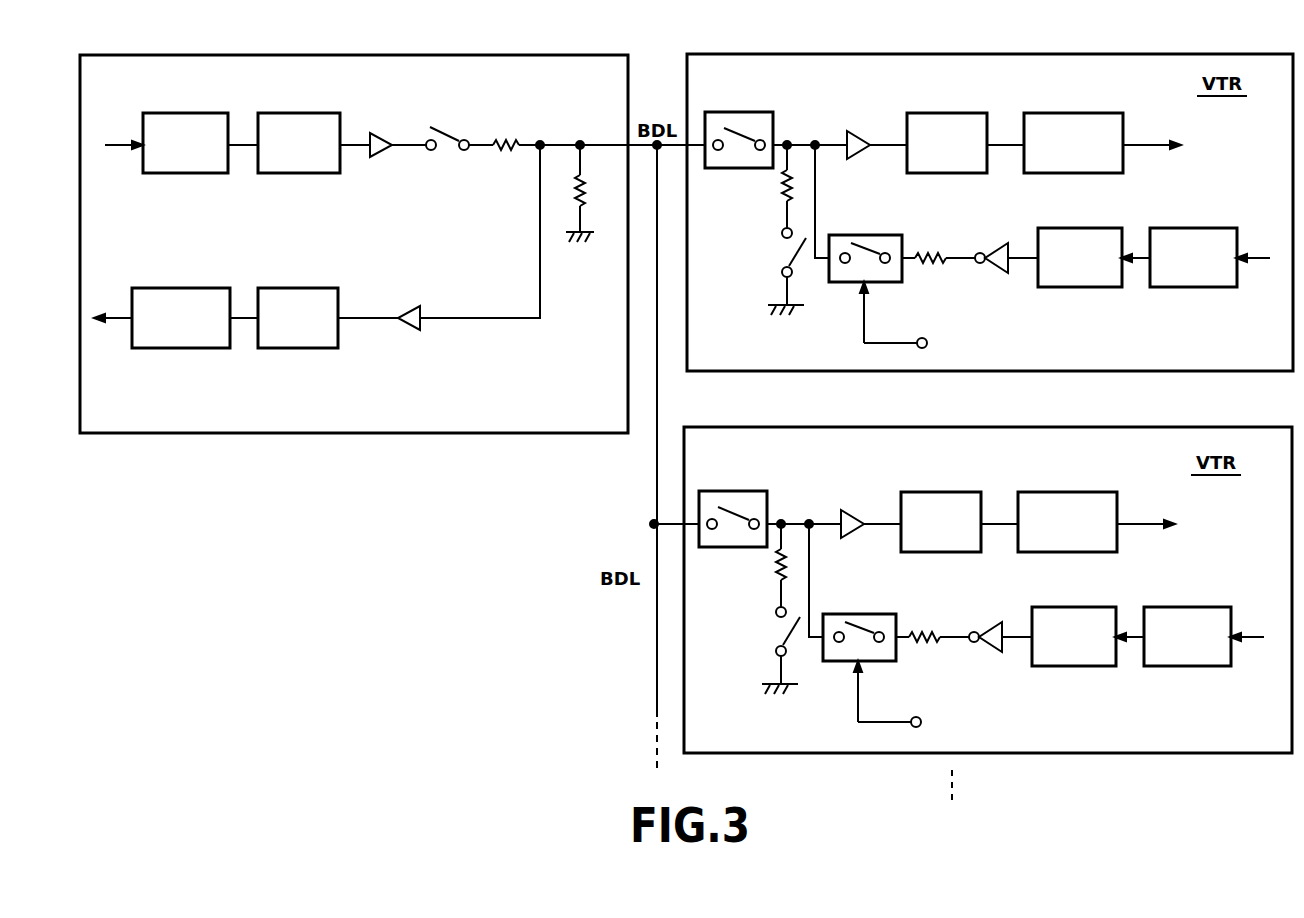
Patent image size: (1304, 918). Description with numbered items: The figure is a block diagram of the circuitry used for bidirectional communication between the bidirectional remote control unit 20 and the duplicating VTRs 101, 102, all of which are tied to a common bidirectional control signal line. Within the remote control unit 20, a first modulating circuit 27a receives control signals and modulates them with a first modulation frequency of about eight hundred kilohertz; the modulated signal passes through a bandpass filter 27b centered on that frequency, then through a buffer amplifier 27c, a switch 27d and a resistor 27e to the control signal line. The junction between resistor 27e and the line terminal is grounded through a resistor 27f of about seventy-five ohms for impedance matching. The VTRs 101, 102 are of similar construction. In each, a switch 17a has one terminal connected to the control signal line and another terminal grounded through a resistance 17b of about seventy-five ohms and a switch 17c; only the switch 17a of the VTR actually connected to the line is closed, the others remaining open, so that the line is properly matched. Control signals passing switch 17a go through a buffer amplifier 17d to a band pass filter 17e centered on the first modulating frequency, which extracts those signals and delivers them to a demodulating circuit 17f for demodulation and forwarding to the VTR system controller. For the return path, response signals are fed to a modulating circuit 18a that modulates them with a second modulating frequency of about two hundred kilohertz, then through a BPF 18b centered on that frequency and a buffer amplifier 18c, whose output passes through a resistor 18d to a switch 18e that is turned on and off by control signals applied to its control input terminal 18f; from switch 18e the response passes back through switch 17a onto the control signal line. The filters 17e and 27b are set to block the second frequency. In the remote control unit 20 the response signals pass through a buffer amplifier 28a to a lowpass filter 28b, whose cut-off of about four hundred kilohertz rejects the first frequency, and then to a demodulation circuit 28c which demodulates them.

The bidirectional remote control unit 20 is at (462, 55).
The first modulating circuit 27a is at (196, 113).
The bandpass filter 27b is at (299, 115).
The buffer amplifier 27c is at (384, 133).
The switch 27d is at (453, 130).
The resistor 27e is at (516, 141).
The resistor 27f is at (586, 188).
The buffer amplifier 28a is at (418, 306).
The lowpass filter 28b is at (314, 296).
The demodulation circuit 28c is at (197, 288).
The VTR 101 is at (1056, 54).
The VTR 102 is at (893, 427).
The switch 17a is at (746, 112).
The resistance 17b is at (783, 190).
The switch 17c is at (796, 250).
The buffer amplifier 17d is at (859, 130).
The band pass filter 17e is at (958, 113).
The demodulating circuit 17f is at (1072, 113).
The modulating circuit 18a is at (1200, 288).
The BPF 18b is at (1093, 288).
The buffer amplifier 18c is at (998, 246).
The resistor 18d is at (936, 252).
The switch 18e is at (865, 240).
The control input terminal 18f is at (935, 337).